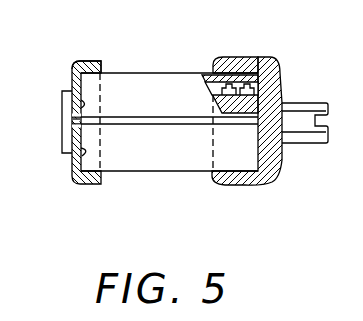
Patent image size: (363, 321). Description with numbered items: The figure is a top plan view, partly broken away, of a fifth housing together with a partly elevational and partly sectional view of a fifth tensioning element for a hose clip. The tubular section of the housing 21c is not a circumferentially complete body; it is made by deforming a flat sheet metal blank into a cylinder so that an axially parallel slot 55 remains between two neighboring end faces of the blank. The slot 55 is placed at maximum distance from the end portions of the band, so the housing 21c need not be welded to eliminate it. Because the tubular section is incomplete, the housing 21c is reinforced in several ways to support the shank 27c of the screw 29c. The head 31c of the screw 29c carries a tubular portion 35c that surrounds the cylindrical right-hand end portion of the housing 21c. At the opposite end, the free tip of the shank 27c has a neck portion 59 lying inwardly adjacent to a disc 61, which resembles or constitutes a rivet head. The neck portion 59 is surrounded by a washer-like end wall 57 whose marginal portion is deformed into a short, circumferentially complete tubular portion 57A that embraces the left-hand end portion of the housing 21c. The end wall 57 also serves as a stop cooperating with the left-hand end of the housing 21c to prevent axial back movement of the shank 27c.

The housing 21c is at (168, 72).
The slot 55 is at (146, 103).
The end wall 57 is at (72, 168).
The tubular portion 57A is at (76, 60).
The neck portion 59 is at (76, 122).
The disc 61 is at (62, 98).
The head 31c is at (275, 60).
The tubular portion 35c is at (231, 57).
The shank 27c is at (263, 93).
The screw 29c is at (296, 159).